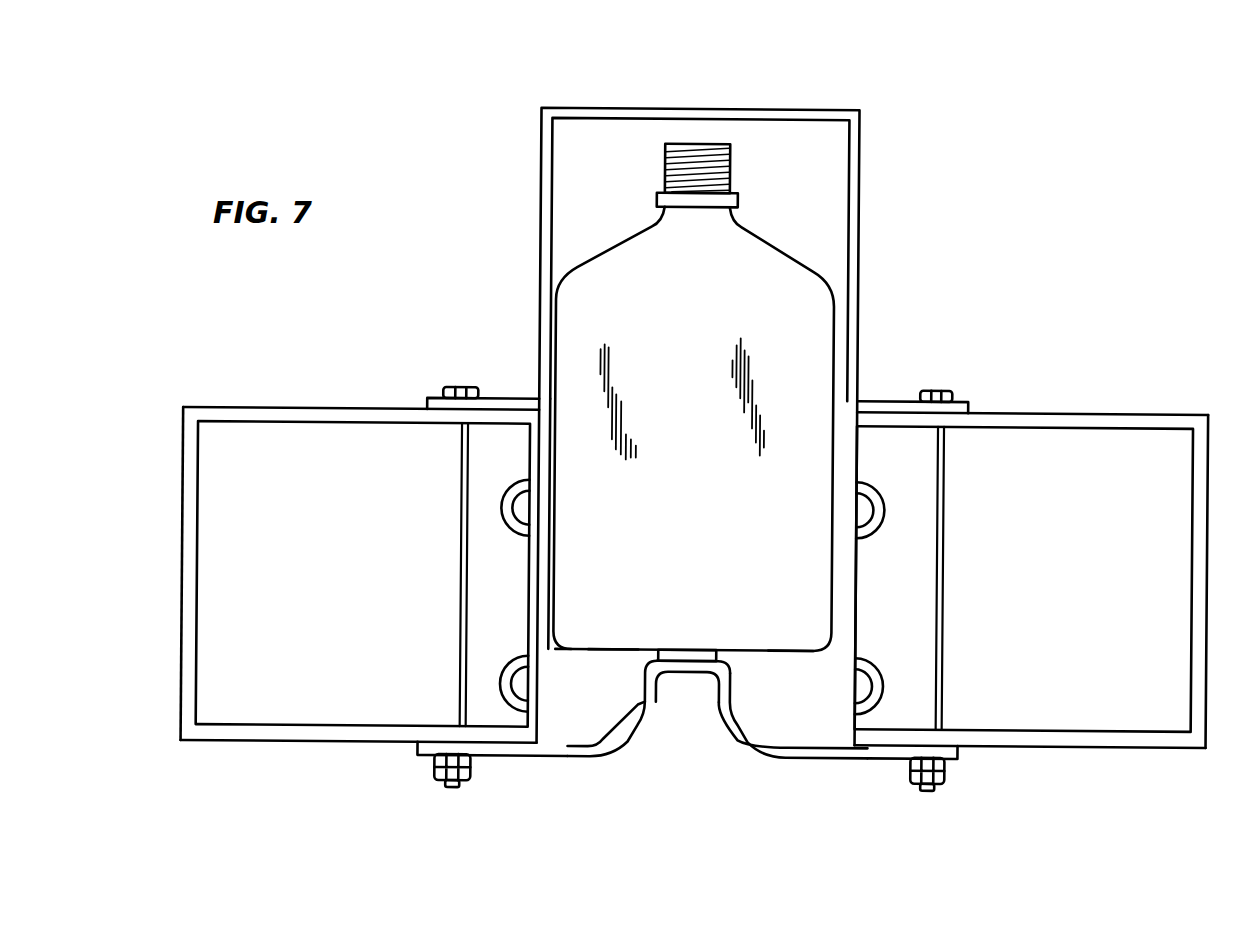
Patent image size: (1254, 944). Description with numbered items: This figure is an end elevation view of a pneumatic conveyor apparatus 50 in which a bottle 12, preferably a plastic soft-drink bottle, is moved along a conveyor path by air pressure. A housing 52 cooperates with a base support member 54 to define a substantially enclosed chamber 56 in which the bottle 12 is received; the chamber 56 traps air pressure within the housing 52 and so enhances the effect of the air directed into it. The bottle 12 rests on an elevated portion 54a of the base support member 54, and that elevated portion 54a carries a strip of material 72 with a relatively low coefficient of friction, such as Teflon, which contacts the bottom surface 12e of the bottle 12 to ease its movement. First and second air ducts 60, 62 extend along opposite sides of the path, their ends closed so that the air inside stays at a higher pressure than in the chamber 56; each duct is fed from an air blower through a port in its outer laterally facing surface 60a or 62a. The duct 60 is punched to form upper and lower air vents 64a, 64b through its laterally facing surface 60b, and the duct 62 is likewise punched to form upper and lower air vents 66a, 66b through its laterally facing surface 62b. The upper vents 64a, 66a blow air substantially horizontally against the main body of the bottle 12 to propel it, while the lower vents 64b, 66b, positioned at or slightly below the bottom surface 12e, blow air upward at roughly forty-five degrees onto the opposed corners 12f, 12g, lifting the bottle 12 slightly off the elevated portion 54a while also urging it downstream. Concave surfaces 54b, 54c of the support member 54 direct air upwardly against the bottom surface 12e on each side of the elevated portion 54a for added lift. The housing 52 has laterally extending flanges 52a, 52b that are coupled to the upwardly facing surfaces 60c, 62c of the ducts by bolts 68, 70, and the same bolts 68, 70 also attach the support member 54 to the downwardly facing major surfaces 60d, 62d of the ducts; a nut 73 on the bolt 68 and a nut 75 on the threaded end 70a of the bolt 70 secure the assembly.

The bottle 12 is at (795, 346).
The bottom surface 12e is at (634, 652).
The corner 12f is at (570, 652).
The corner 12g is at (800, 652).
The pneumatic conveyor apparatus 50 is at (478, 213).
The housing 52 is at (690, 109).
The laterally extending flange 52a is at (505, 400).
The laterally extending flange 52b is at (894, 400).
The base support member 54 is at (713, 704).
The elevated portion 54a is at (730, 668).
The concave surface 54b is at (636, 748).
The concave surface 54c is at (760, 748).
The substantially enclosed chamber 56 is at (797, 160).
The first air duct 60 is at (357, 573).
The laterally facing surface 60a is at (198, 565).
The laterally facing surface 60b is at (470, 595).
The upwardly facing surface 60c is at (306, 411).
The downwardly facing major surface 60d is at (314, 745).
The second air duct 62 is at (1039, 583).
The laterally facing surface 62a is at (1193, 567).
The laterally facing surface 62b is at (862, 597).
The upwardly facing surface 62c is at (1076, 411).
The downwardly facing major surface 62d is at (1080, 745).
The upper air vent 64a is at (528, 509).
The lower air vent 64b is at (522, 672).
The upper air vent 66a is at (862, 509).
The lower air vent 66b is at (870, 672).
The bolt 68 is at (455, 389).
The bolt 70 is at (940, 389).
The threaded end 70a is at (930, 790).
The strip of material 72 is at (688, 650).
The nut 73 is at (438, 762).
The nut 75 is at (952, 766).